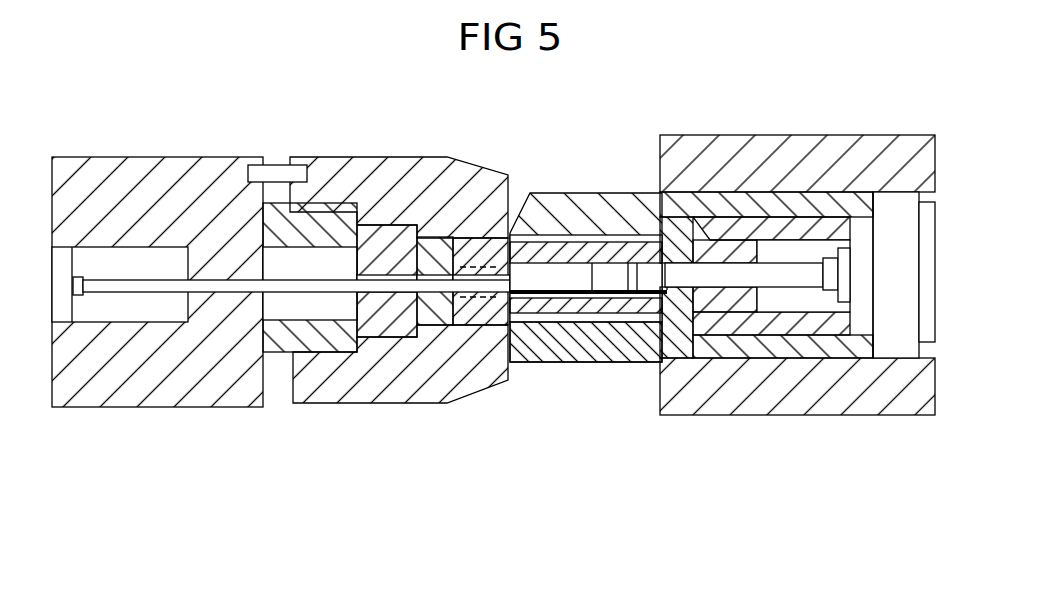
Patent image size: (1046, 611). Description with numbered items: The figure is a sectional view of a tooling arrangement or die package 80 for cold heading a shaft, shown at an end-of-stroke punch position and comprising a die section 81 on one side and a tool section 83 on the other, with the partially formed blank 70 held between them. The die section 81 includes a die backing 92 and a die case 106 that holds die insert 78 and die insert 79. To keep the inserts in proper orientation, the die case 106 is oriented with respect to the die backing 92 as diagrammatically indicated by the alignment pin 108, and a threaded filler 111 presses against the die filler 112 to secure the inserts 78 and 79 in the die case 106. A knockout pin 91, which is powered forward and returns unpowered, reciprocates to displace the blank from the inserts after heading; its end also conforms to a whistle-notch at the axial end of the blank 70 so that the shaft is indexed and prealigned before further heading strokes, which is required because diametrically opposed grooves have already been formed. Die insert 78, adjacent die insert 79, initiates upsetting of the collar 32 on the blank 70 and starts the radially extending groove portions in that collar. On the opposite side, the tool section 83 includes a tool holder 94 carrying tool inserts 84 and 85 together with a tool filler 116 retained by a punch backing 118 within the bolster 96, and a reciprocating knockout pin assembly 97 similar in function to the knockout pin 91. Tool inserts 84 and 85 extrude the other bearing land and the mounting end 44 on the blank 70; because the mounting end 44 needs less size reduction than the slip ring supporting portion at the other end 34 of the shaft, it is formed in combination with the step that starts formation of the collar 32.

The alignment pin 108 is at (278, 156).
The die insert 79 is at (433, 247).
The die insert 78 is at (480, 250).
The blank 70 is at (588, 269).
The tool insert 85 is at (607, 257).
The tool insert 84 is at (675, 253).
The tool holder 94 is at (728, 210).
The tool filler 116 is at (817, 230).
The punch backing 118 is at (888, 210).
The die backing 92 is at (84, 407).
The knockout pin 91 is at (128, 308).
The die section 81 is at (281, 291).
The threaded filler 111 is at (275, 357).
The die case 106 is at (317, 390).
The die filler 112 is at (380, 322).
The other end 34 is at (433, 276).
The collar 32 is at (543, 362).
The mounting end 44 is at (653, 297).
The die package 80 is at (588, 336).
The bolster 96 is at (713, 397).
The tool section 83 is at (797, 293).
The knockout pin assembly 97 is at (812, 305).